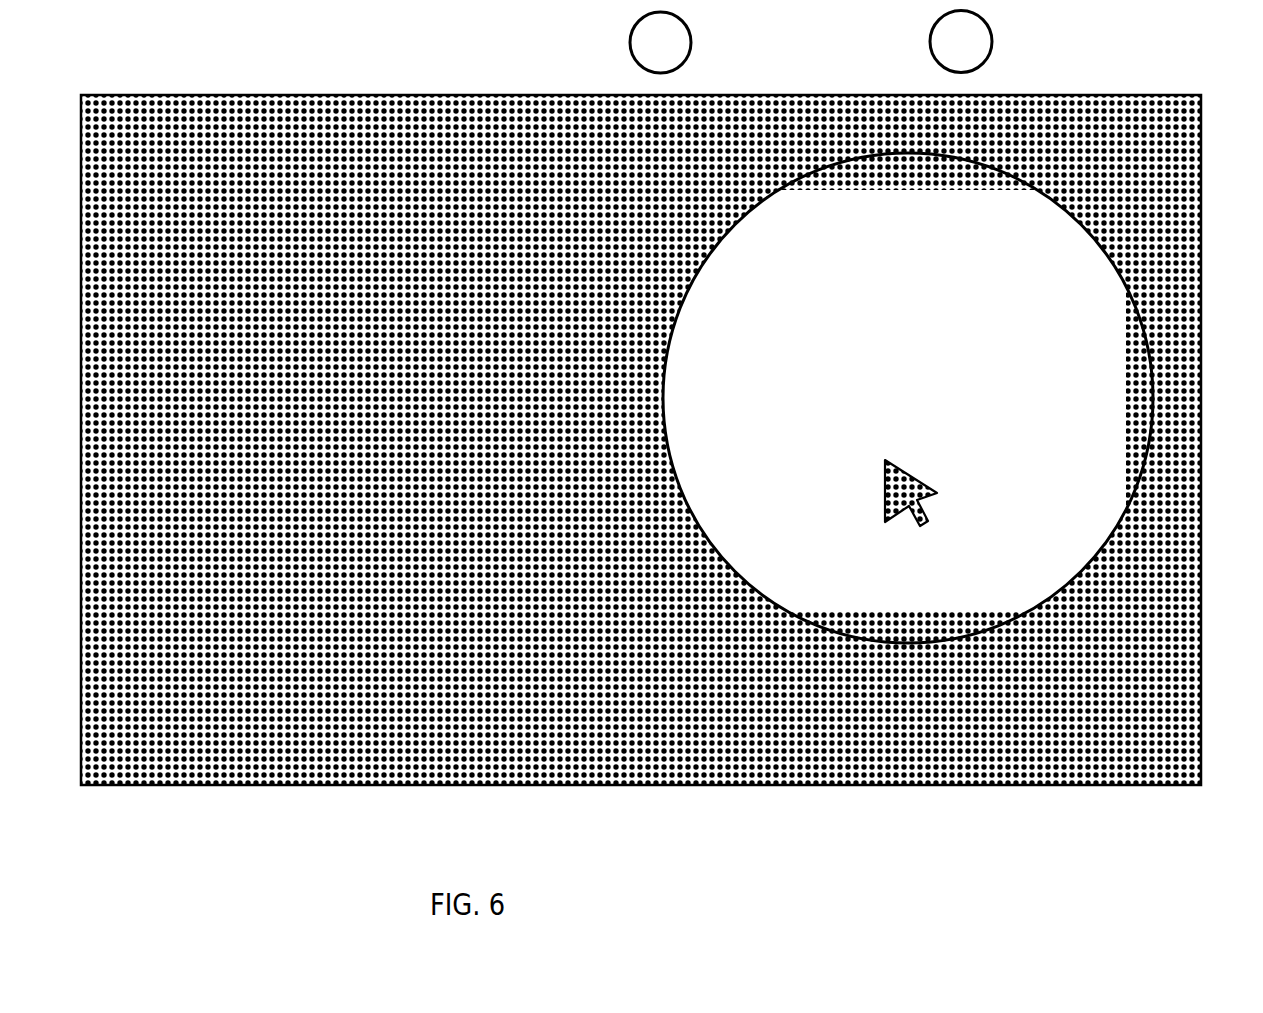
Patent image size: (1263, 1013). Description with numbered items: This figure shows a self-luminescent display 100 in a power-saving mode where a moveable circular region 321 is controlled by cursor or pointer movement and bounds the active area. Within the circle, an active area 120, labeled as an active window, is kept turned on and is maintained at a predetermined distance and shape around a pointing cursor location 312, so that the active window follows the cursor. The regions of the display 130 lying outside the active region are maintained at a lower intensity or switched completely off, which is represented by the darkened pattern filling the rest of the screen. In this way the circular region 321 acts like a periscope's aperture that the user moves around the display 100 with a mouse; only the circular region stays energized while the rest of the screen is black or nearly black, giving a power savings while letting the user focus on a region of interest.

The display 100 is at (1233, 41).
The regions of the display outside the active region 130 is at (274, 104).
The circular region 321 is at (830, 163).
The active region 120 is at (963, 323).
The pointing cursor location 312 is at (932, 496).